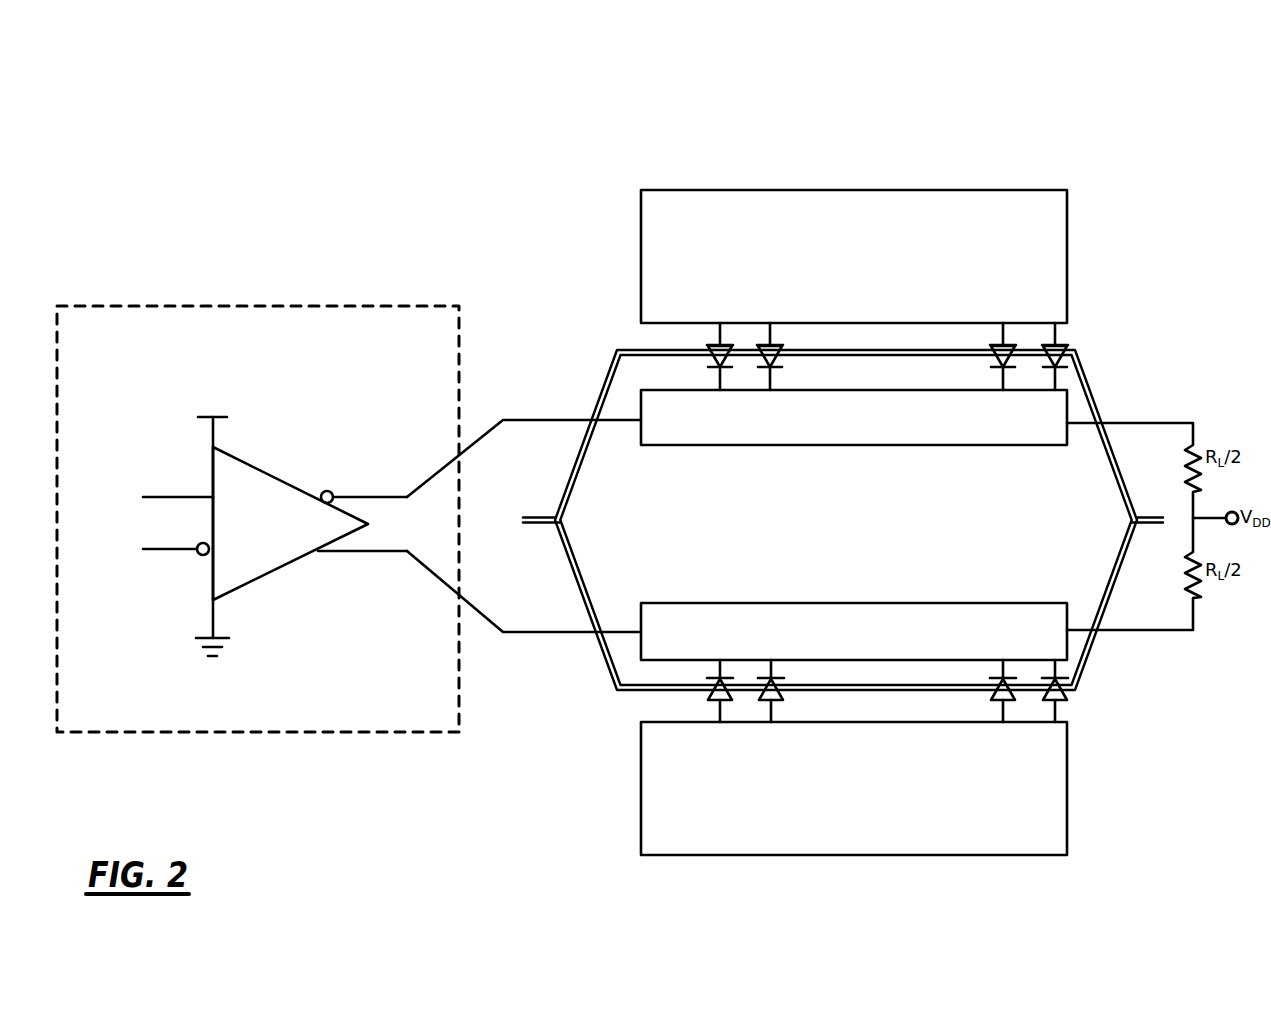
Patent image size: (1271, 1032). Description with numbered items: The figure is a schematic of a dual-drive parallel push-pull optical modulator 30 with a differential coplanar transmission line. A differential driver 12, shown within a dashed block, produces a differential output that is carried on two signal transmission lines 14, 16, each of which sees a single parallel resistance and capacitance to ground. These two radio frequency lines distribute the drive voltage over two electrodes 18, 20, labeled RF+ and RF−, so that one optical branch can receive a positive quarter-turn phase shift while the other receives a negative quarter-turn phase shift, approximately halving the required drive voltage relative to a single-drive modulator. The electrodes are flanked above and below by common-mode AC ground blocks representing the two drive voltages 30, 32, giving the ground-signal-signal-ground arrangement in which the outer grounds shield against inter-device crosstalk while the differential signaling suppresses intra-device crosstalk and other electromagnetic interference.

The differential driver 12 is at (278, 306).
The signal transmission line 14 is at (515, 420).
The signal transmission line 16 is at (571, 632).
The electrode 18 is at (908, 445).
The electrode 20 is at (897, 602).
The dual-drive parallel push-pull optical modulator 30 is at (878, 190).
The drive voltage 32 is at (940, 855).